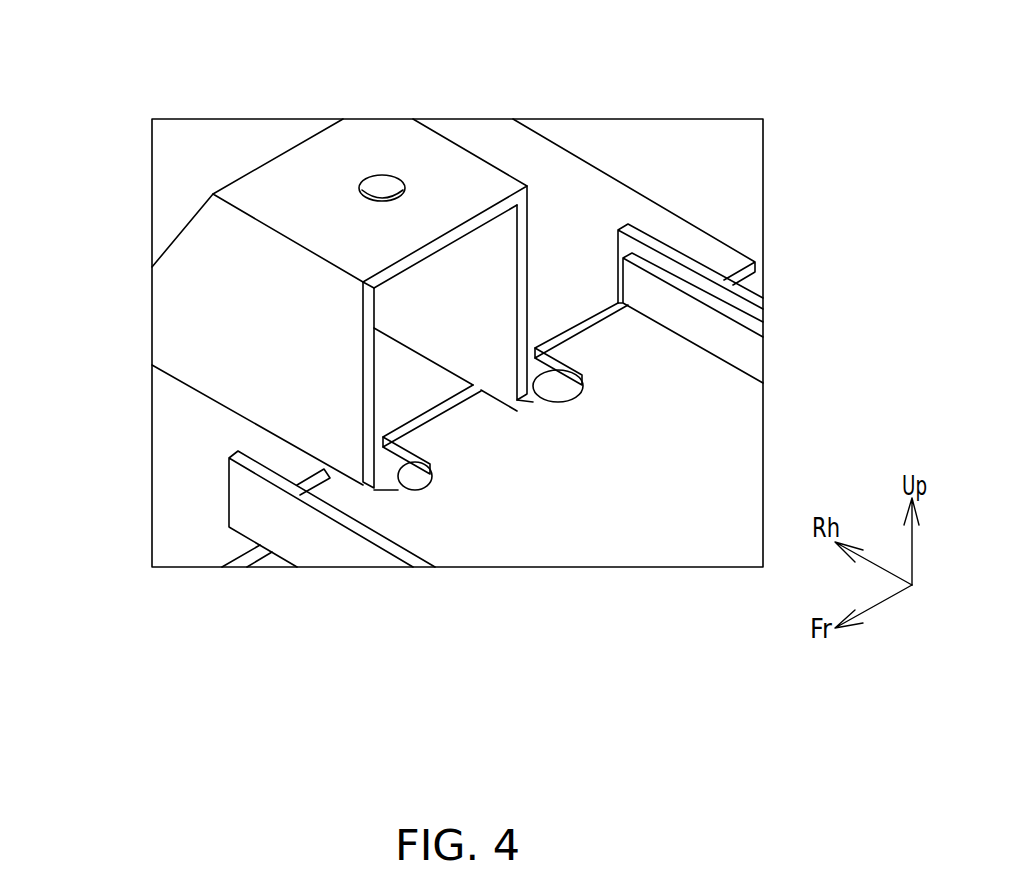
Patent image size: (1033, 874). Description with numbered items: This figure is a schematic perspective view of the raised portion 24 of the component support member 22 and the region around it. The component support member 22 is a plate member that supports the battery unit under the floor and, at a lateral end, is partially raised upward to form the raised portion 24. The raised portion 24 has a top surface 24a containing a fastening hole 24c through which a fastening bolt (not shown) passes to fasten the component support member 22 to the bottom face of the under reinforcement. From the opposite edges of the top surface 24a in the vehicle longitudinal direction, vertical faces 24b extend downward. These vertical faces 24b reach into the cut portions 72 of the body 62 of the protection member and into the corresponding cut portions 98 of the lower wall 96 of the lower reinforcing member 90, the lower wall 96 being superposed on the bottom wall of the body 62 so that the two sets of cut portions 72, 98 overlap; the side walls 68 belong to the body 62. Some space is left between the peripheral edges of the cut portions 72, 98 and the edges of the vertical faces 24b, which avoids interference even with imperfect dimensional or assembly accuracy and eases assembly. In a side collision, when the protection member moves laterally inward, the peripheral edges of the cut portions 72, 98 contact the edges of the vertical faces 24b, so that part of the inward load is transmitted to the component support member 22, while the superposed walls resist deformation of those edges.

The raised portion 24 is at (315, 157).
The top surface 24a is at (472, 177).
The vertical faces 24b is at (530, 237).
The fastening hole 24c is at (385, 188).
The component support member 22 is at (608, 207).
The cut portions 72 is at (433, 447).
The cut portions 98 is at (478, 430).
The lower wall 96 is at (826, 429).
The lower reinforcing member 90 is at (727, 477).
The side walls 68 is at (322, 550).
The body 62 is at (337, 555).